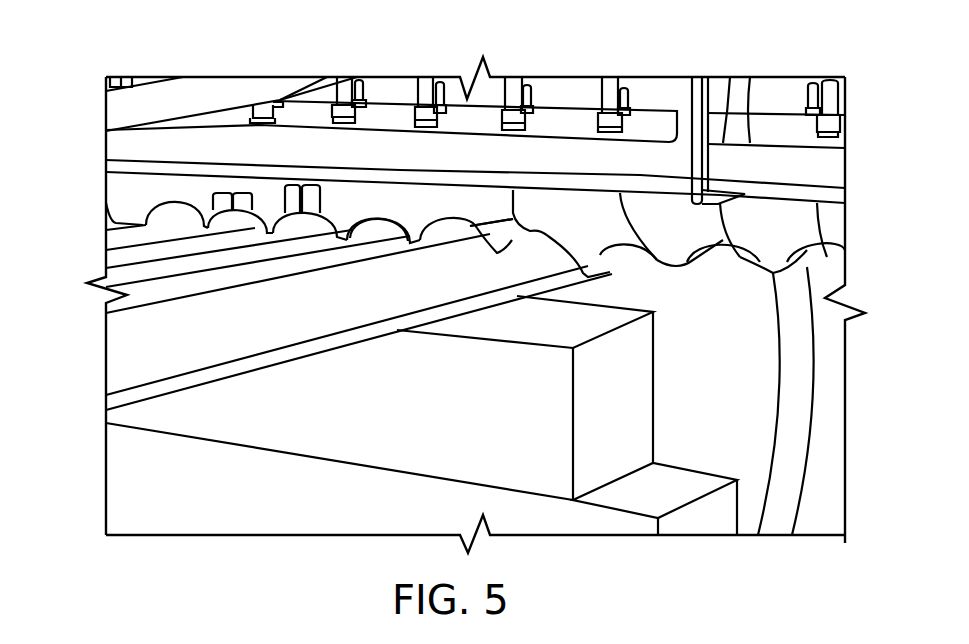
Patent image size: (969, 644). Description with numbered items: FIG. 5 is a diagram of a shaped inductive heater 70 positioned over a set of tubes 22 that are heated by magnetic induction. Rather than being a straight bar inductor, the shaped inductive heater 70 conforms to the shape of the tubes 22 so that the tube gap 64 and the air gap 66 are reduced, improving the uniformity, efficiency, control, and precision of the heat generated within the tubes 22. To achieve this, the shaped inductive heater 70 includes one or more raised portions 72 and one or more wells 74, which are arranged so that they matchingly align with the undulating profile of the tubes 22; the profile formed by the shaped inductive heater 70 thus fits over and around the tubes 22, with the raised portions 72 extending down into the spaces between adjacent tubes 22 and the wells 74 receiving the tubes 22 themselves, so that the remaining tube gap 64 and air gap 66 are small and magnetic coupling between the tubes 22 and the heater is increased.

The tubes 22 is at (157, 333).
The tube gap 64 is at (460, 227).
The air gap 66 is at (510, 263).
The shaped inductive heater 70 is at (320, 147).
The raised portions 72 is at (347, 212).
The wells 74 is at (375, 220).